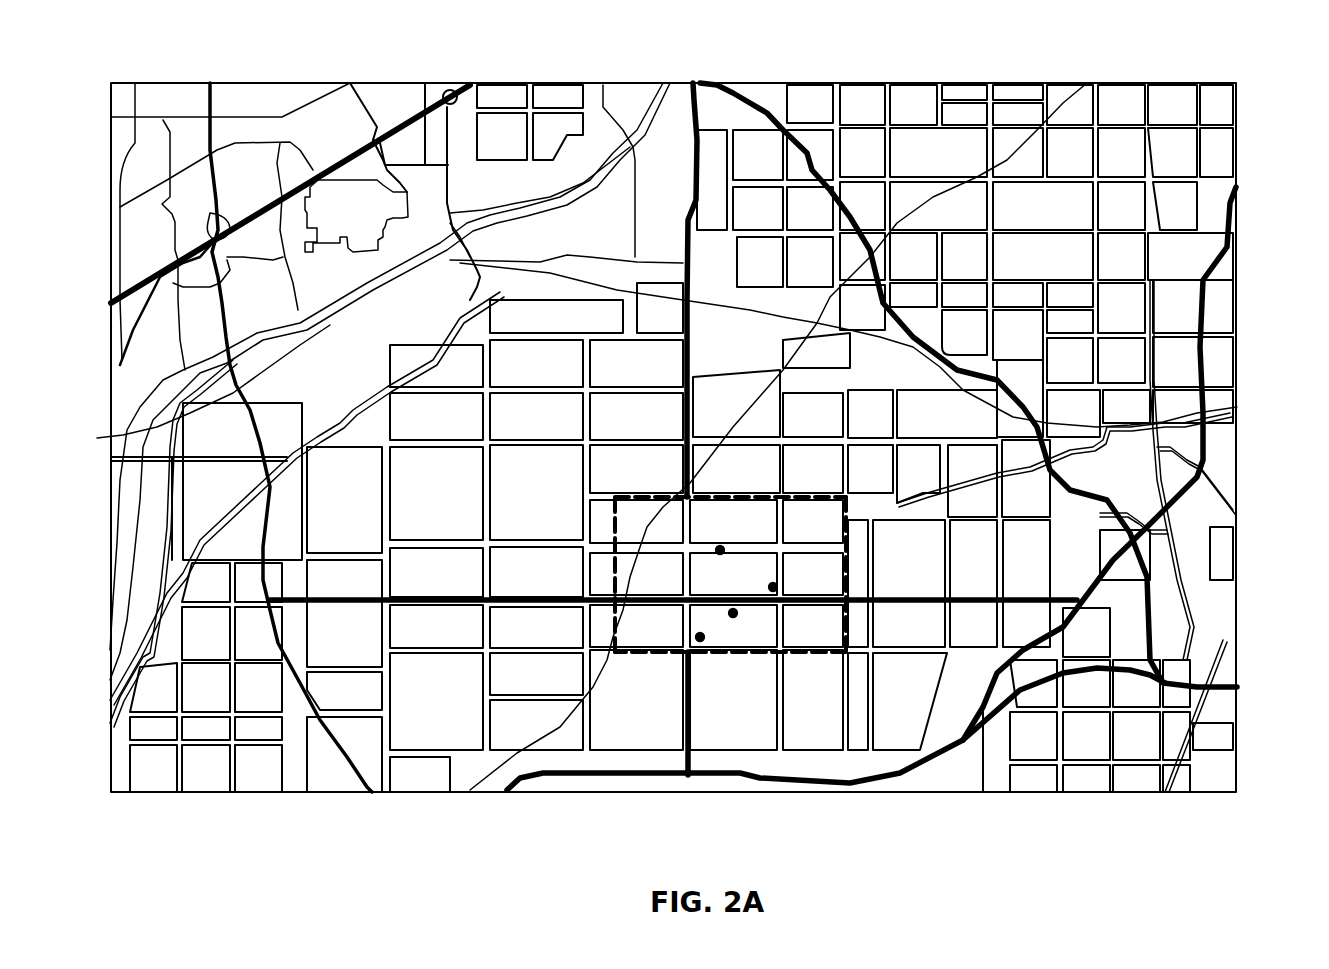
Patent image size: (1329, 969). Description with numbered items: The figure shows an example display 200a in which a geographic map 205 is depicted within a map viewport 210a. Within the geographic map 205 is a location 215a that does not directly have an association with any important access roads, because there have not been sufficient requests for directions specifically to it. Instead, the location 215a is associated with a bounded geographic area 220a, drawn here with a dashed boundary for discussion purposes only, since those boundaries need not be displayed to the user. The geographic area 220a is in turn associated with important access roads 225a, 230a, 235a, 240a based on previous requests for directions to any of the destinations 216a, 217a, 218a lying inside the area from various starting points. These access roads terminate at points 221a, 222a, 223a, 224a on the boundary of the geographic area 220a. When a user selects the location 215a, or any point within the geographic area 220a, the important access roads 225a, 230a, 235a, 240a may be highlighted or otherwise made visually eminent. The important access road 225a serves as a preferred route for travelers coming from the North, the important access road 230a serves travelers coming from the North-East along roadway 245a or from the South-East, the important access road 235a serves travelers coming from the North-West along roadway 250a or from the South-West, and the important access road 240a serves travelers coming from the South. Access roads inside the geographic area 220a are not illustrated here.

The display 200a is at (1003, 67).
The geographic map 205 is at (247, 102).
The map viewport 210a is at (425, 112).
The location 215a is at (735, 618).
The destination 216a is at (698, 638).
The destination 217a is at (722, 545).
The destination 218a is at (776, 585).
The geographic area 220a is at (729, 646).
The point on boundary 221a is at (680, 490).
The point on boundary 222a is at (848, 593).
The point on boundary 223a is at (700, 660).
The point on boundary 224a is at (613, 597).
The important access road 225a is at (703, 157).
The important access road 230a is at (1032, 605).
The important access road 235a is at (433, 605).
The important access road 240a is at (687, 760).
The roadway 245a is at (1205, 315).
The roadway 250a is at (187, 387).